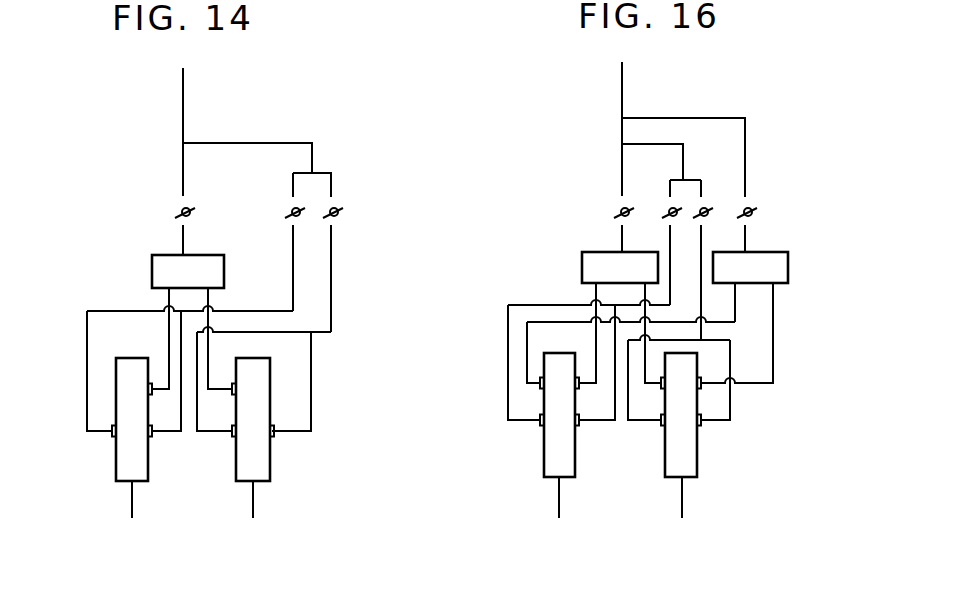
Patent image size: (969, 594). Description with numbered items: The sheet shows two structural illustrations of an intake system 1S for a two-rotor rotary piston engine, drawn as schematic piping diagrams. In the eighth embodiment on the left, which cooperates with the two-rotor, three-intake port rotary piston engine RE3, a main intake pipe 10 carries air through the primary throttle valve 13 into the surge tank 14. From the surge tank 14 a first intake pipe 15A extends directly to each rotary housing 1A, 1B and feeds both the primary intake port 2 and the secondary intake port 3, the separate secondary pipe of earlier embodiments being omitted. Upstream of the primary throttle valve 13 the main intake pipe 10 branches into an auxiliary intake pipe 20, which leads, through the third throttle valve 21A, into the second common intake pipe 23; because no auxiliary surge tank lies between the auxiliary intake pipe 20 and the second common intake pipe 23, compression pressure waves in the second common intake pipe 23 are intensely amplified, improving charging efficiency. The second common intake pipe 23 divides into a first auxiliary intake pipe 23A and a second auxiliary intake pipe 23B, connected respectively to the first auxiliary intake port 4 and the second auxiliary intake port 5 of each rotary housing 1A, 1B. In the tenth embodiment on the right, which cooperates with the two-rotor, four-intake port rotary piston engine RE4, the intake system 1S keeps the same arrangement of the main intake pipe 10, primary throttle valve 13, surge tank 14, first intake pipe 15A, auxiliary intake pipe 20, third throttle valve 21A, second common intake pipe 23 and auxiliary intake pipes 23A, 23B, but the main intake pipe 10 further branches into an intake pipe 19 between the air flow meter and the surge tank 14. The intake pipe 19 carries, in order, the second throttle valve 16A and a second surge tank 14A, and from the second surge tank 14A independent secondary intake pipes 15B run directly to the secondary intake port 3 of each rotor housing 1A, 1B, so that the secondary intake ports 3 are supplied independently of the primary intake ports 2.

In FIG. 14, the main intake pipe 10 is at (183, 100).
In FIG. 16, the main intake pipe 10 is at (622, 92).
In FIG. 14, the auxiliary intake pipe 20 is at (257, 143).
In FIG. 16, the auxiliary intake pipe 20 is at (687, 118).
In FIG. 14, the primary throttle valve 13 is at (176, 219).
In FIG. 16, the primary throttle valve 13 is at (614, 220).
In FIG. 14, the surge tank 14 is at (152, 263).
In FIG. 16, the surge tank 14 is at (582, 262).
In FIG. 16, the second surge tank 14A is at (790, 263).
In FIG. 14, the first intake pipe 15A is at (168, 323).
In FIG. 16, the first intake pipe 15A is at (597, 340).
In FIG. 16, the secondary intake pipe 15B is at (735, 305).
In FIG. 16, the second throttle valve 16A is at (757, 208).
In FIG. 16, the intake pipe 19 is at (795, 136).
In FIG. 14, the third throttle valve 21A is at (285, 216).
In FIG. 16, the third throttle valve 21A is at (662, 219).
In FIG. 14, the second common intake pipe 23 is at (181, 331).
In FIG. 16, the second common intake pipe 23 is at (667, 240).
In FIG. 16, the first auxiliary intake pipe 23A is at (617, 412).
In FIG. 16, the second auxiliary intake pipe 23B is at (508, 368).
In FIG. 14, the intake system 1S is at (105, 250).
In FIG. 16, the intake system 1S is at (553, 220).
In FIG. 14, the rotary housing 1A is at (115, 487).
In FIG. 16, the rotary housing 1A is at (546, 487).
In FIG. 14, the rotary housing 1B is at (280, 460).
In FIG. 16, the rotary housing 1B is at (708, 470).
In FIG. 14, the primary intake port 2 is at (152, 392).
In FIG. 16, the primary intake port 2 is at (578, 388).
In FIG. 16, the secondary intake port 3 is at (540, 386).
In FIG. 14, the first auxiliary intake port 4 is at (152, 436).
In FIG. 16, the first auxiliary intake port 4 is at (578, 425).
In FIG. 14, the second auxiliary intake port 5 is at (113, 434).
In FIG. 16, the second auxiliary intake port 5 is at (540, 426).
In FIG. 14, the two-rotor, three-intake port rotary piston engine RE3 is at (204, 475).
In FIG. 16, the two-rotor, four-intake port rotary piston engine RE4 is at (600, 497).